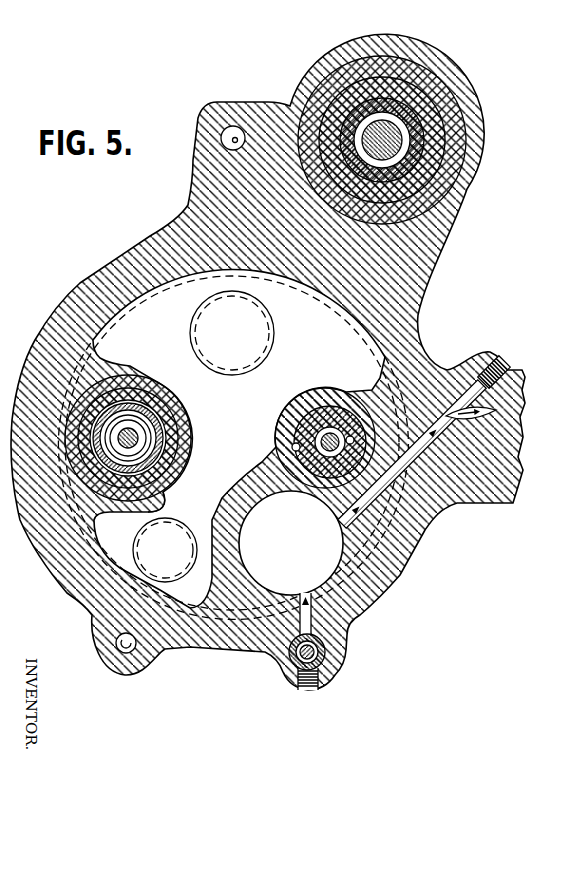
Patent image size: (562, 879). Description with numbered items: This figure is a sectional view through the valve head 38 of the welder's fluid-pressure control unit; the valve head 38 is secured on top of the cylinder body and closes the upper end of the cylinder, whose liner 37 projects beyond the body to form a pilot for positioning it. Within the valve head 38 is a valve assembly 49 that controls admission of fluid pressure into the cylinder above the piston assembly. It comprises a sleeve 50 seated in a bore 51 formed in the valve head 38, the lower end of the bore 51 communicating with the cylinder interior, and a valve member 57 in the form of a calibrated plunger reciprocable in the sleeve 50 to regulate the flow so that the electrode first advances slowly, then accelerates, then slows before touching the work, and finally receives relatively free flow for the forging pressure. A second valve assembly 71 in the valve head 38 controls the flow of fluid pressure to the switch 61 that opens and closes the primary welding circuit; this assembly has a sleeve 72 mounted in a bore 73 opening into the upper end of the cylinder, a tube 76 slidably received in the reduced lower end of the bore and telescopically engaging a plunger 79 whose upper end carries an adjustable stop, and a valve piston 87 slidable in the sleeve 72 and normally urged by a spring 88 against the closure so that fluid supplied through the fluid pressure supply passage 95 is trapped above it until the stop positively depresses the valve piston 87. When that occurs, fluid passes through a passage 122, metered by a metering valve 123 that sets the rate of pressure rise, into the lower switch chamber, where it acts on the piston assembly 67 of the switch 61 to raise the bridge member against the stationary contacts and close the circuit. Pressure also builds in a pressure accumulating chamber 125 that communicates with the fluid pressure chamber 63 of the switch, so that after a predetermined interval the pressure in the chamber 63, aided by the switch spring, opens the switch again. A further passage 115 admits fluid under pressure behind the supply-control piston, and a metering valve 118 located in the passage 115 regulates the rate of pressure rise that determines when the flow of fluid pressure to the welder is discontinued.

The valve head 38 is at (90, 272).
The liner 37 is at (138, 303).
The pressure accumulating chamber 125 is at (328, 301).
The switch 61 is at (437, 107).
The fluid pressure chamber 63 is at (412, 140).
The piston assembly 67 is at (407, 158).
The passage 122 is at (237, 128).
The metering valve 123 is at (233, 142).
The valve assembly 71 is at (152, 428).
The bore 73 is at (143, 392).
The plunger 79 is at (164, 416).
The tube 76 is at (147, 440).
The valve piston 87 is at (178, 460).
The sleeve 72 is at (178, 482).
The spring 88 is at (157, 503).
The valve assembly 49 is at (298, 423).
The sleeve 50 is at (336, 392).
The bore 51 is at (297, 449).
The valve member 57 is at (323, 457).
The passage 115 is at (433, 512).
The metering valve 118 is at (322, 640).
The fluid pressure supply passage 95 is at (134, 652).